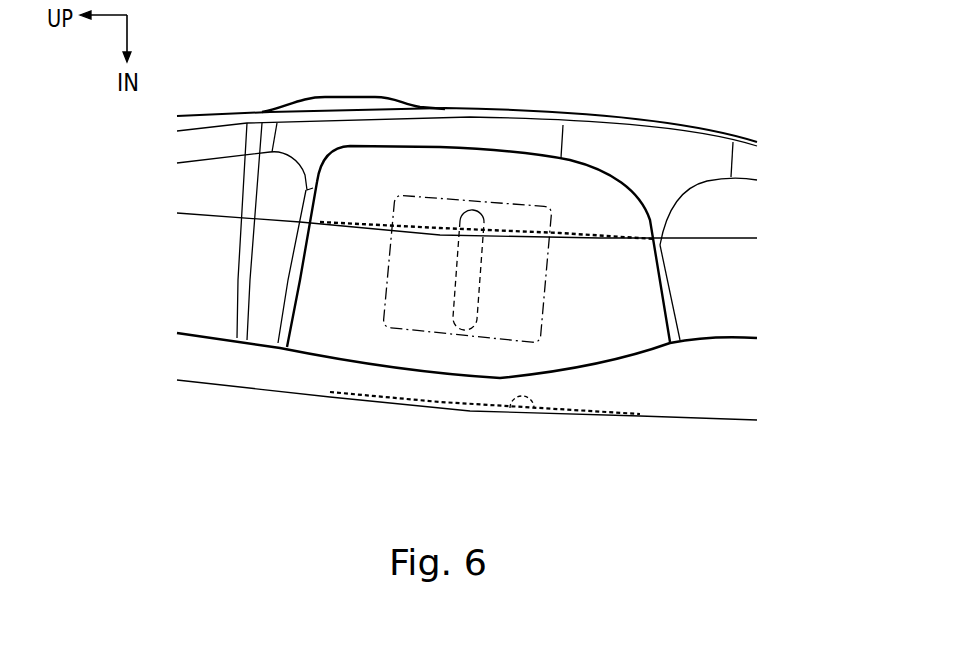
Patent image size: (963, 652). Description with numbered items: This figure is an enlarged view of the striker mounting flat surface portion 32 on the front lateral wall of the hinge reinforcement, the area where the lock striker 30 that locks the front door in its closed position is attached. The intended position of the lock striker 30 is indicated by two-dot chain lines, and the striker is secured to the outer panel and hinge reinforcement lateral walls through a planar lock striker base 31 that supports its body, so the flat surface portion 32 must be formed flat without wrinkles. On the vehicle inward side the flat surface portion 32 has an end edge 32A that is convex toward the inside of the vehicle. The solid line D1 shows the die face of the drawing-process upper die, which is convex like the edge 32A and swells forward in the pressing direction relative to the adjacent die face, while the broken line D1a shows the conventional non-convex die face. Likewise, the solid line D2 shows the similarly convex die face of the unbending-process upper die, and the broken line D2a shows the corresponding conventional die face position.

The lock striker 30 is at (473, 211).
The lock striker base 31 is at (425, 196).
The striker mounting flat surface portion 32 is at (598, 200).
The end edge of the flat surface portion 32A is at (447, 378).
The die face of the upper die in the drawing process D1 is at (565, 240).
The conventional die face in the drawing process D1a is at (512, 228).
The die face of the upper die in the unbending process D2 is at (560, 418).
The conventional die face in the unbending process D2a is at (512, 408).